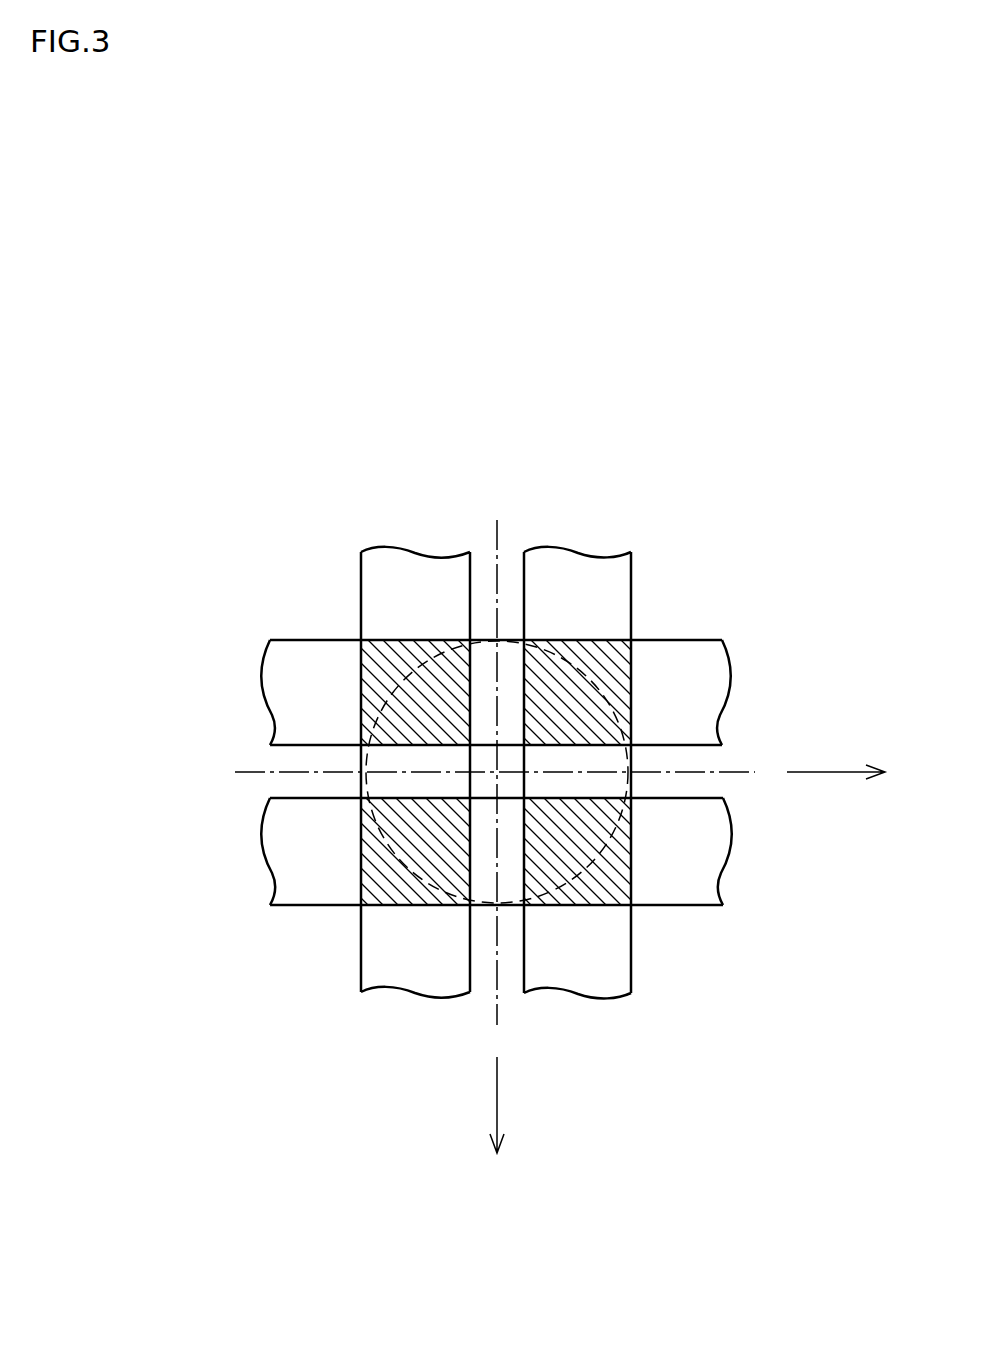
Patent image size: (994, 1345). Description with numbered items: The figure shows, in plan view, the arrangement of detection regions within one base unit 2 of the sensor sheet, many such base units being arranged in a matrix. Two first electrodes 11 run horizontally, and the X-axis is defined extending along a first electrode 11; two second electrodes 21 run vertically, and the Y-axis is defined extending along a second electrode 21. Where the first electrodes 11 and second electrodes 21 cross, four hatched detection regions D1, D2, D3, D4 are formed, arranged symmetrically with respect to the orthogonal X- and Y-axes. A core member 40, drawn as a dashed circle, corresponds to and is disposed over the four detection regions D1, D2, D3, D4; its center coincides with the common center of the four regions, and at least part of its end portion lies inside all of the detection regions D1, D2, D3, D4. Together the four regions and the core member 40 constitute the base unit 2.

The base unit 2 is at (760, 504).
The first electrode 11 is at (693, 692).
The second electrode 21 is at (577, 965).
The core member 40 is at (512, 660).
The detection region D1 is at (385, 661).
The detection region D2 is at (611, 661).
The detection region D3 is at (386, 880).
The detection region D4 is at (610, 880).